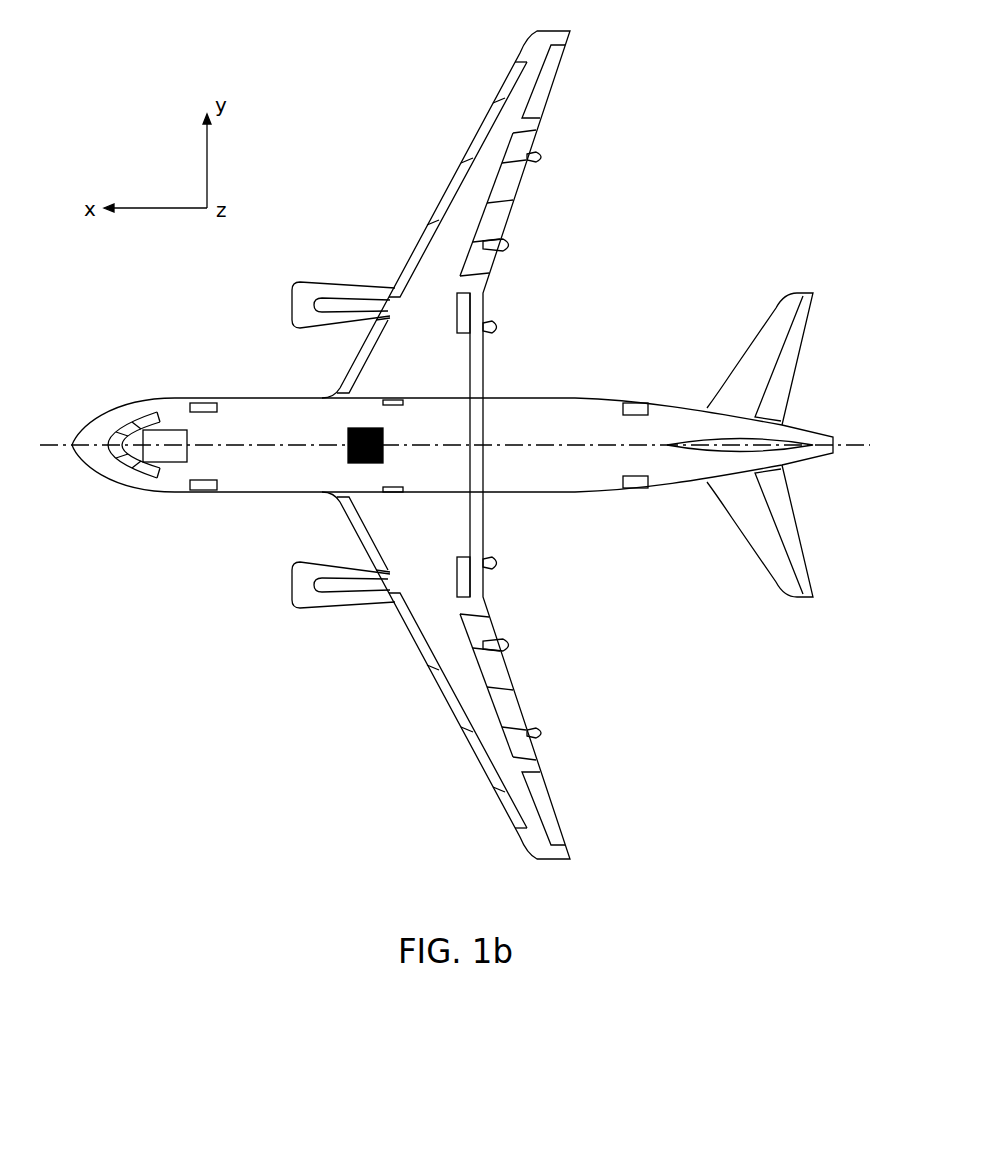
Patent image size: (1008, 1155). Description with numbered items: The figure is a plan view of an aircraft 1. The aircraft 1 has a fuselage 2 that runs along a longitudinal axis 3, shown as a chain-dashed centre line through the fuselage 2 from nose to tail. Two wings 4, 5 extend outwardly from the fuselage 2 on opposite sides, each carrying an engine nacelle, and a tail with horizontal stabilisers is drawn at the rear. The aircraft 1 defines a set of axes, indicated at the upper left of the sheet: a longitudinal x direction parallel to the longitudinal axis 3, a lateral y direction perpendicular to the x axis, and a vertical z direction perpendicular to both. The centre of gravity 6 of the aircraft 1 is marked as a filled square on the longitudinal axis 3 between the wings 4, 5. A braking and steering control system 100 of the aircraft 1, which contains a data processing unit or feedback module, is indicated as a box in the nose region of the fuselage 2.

The aircraft 1 is at (636, 236).
The fuselage 2 is at (212, 463).
The longitudinal axis 3 is at (520, 447).
The wing 4 is at (515, 787).
The wing 5 is at (497, 137).
The centre of gravity 6 is at (343, 458).
The braking and steering control system 100 is at (158, 442).